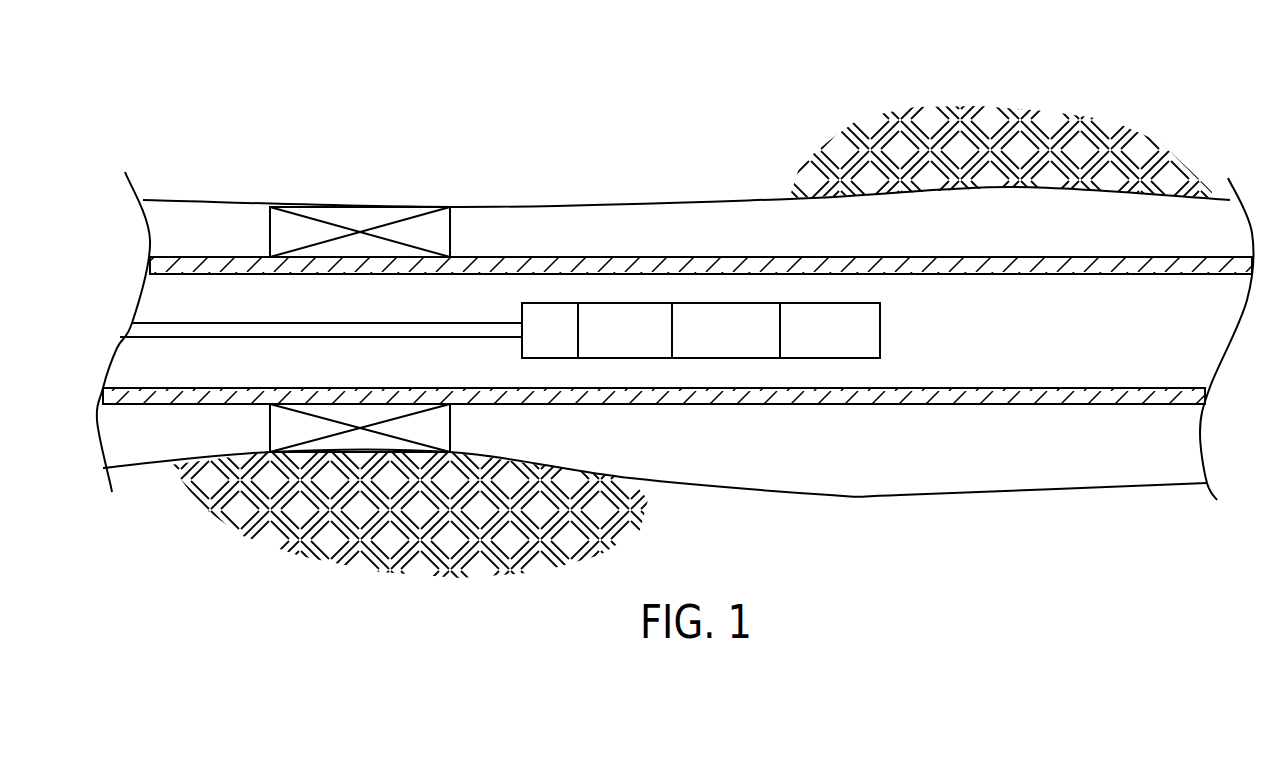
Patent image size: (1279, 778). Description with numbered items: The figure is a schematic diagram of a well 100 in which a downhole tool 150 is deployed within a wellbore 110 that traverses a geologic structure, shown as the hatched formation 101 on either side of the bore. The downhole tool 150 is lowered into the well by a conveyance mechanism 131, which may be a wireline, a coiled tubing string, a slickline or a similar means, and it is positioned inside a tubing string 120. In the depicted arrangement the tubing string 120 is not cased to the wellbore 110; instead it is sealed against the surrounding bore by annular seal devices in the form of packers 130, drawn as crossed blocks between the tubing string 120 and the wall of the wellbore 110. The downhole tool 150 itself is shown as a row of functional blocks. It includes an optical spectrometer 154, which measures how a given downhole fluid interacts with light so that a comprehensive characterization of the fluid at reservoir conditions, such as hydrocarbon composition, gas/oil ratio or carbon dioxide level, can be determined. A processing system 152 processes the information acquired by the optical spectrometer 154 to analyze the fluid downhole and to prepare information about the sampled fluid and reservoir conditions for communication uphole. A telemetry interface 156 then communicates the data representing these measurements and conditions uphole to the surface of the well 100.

The well 100 is at (1003, 97).
The subterranean formation 101 is at (128, 499).
The wellbore 110 is at (523, 217).
The tubing string 120 is at (1032, 257).
The packers 130 is at (284, 223).
The conveyance mechanism 131 is at (217, 323).
The downhole tool 150 is at (701, 250).
The processing system 152 is at (627, 303).
The optical spectrometer 154 is at (718, 303).
The telemetry interface 156 is at (553, 303).